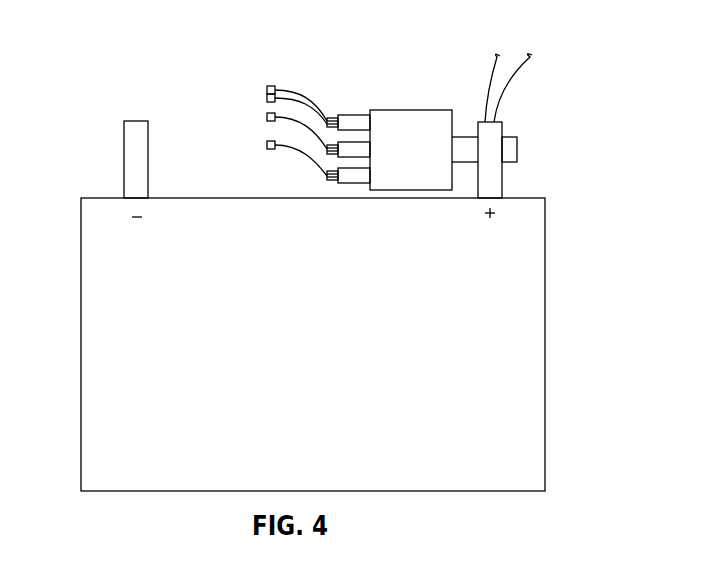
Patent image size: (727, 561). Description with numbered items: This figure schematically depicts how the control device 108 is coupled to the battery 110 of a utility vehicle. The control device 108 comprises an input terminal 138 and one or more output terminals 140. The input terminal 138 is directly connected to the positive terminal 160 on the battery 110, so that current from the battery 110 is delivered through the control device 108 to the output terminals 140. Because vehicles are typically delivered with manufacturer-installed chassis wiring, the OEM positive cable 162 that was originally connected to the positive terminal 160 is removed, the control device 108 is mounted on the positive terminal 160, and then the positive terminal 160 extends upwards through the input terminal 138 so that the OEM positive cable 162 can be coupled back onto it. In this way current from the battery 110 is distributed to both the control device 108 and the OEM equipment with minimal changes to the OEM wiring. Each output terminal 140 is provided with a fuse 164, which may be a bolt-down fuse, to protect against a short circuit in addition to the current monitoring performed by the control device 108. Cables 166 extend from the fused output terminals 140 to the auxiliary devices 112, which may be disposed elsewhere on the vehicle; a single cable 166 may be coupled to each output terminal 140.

The control device 108 is at (398, 42).
The battery 110 is at (532, 343).
The auxiliary devices 112 is at (262, 83).
The input terminal 138 is at (507, 155).
The output terminals 140 is at (360, 121).
The positive terminal 160 is at (493, 185).
The OEM positive cable 162 is at (490, 82).
The fuses 164 is at (332, 117).
The cables 166 is at (312, 165).